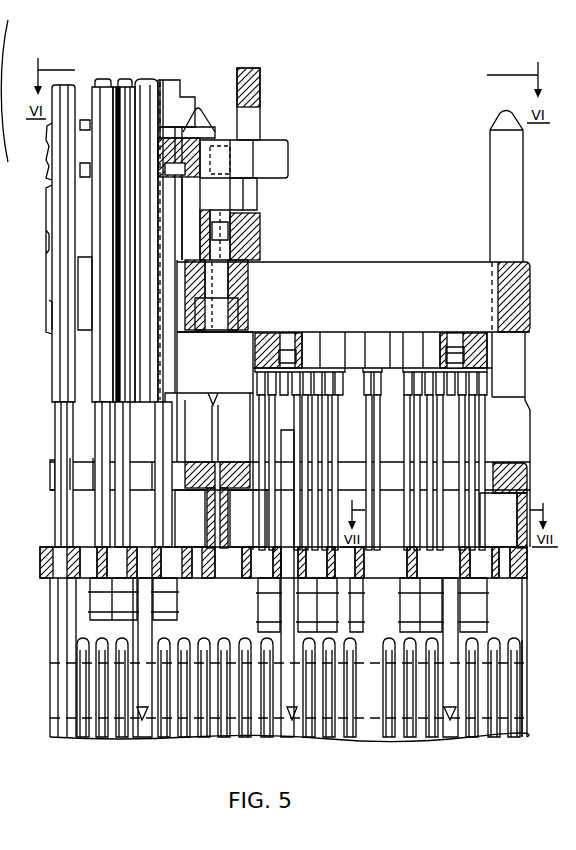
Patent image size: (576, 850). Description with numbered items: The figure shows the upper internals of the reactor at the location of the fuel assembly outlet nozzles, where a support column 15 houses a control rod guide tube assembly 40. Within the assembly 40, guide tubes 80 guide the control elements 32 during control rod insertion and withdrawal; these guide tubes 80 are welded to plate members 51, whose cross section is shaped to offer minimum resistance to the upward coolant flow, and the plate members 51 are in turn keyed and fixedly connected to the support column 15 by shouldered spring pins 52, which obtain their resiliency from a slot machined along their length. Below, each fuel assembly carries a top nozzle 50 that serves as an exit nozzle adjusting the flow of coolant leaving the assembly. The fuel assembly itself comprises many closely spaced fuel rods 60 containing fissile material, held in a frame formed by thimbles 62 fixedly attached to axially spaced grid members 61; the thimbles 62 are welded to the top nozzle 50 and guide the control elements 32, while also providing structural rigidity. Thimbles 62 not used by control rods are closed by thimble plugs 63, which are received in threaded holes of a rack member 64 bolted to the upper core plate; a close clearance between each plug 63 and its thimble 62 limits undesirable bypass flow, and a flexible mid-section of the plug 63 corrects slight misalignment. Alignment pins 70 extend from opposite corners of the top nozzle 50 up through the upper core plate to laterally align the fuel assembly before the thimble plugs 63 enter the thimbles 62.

The support column 15 is at (260, 98).
The control element 32 is at (160, 79).
The control rod guide tube assembly 40 is at (50, 199).
The top nozzle 50 is at (526, 578).
The plate member 51 is at (48, 142).
The shouldered spring pin 52 is at (288, 160).
The fuel rod 60 is at (521, 649).
The grid member 61 is at (524, 690).
The thimble 62 is at (140, 725).
The thimble plug 63 is at (285, 632).
The rack member 64 is at (273, 333).
The alignment pin 70 is at (490, 179).
The guide tube 80 is at (52, 378).